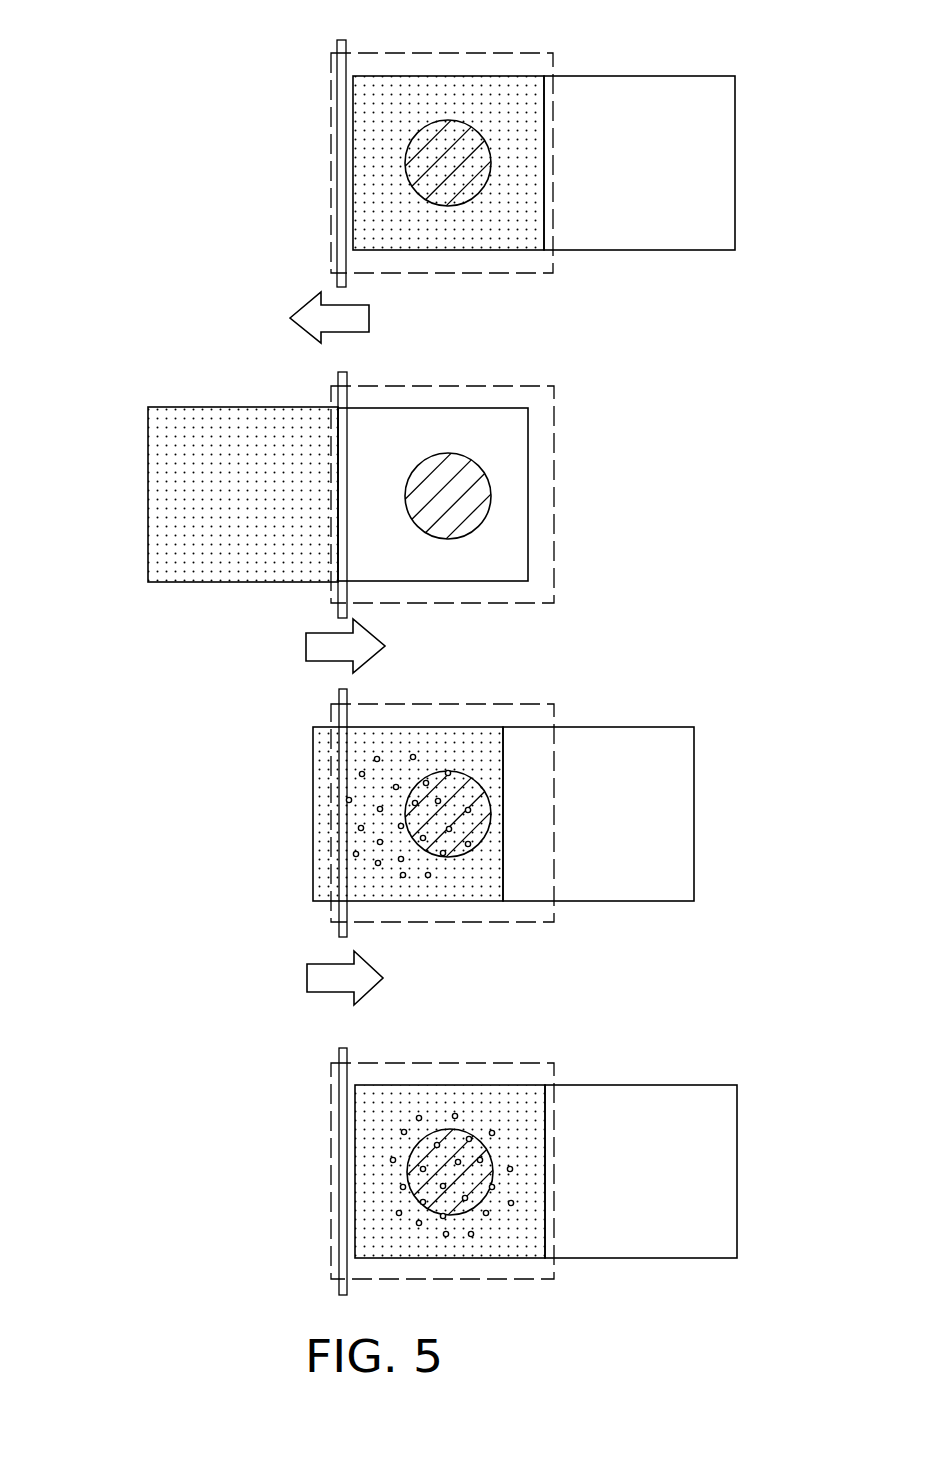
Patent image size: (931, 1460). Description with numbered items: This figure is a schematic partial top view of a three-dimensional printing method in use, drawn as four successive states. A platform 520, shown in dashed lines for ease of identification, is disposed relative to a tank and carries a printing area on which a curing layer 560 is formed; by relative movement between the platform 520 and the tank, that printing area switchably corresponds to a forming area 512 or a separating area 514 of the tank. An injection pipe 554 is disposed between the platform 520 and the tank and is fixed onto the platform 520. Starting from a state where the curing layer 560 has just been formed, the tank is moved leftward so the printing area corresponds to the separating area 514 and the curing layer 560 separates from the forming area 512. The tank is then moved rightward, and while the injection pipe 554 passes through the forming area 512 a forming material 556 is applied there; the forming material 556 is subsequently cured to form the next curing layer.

The forming area 512 is at (482, 110).
The separating area 514 is at (716, 142).
The platform 520 is at (331, 144).
The injection pipe 554 is at (341, 40).
The forming material 556 is at (412, 753).
The curing layer 560 is at (450, 187).